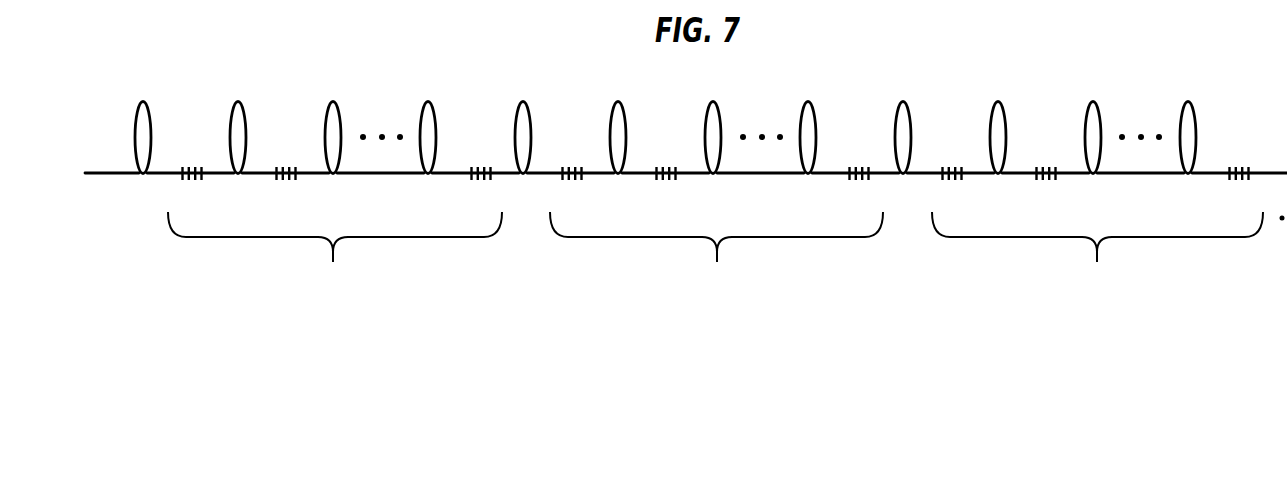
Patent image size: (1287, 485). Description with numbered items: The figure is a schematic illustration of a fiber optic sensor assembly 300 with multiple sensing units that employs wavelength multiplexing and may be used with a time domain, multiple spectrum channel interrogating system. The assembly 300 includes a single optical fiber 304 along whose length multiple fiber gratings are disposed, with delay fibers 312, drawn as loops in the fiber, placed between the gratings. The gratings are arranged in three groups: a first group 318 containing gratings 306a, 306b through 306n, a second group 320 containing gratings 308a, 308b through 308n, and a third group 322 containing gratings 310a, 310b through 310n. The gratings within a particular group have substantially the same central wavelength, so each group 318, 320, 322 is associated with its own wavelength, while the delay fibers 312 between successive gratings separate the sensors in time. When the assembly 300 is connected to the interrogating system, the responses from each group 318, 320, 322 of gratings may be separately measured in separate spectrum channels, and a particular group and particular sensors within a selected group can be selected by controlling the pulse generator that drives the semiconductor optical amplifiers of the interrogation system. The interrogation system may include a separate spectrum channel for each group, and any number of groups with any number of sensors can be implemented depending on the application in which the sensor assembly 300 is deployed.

The fiber optic sensor assembly 300 is at (360, 80).
The optical fiber 304 is at (112, 174).
The fiber grating 306a is at (191, 158).
The fiber grating 306b is at (285, 158).
The fiber grating 306n is at (481, 158).
The fiber grating 308a is at (571, 158).
The fiber grating 308b is at (665, 158).
The fiber grating 308n is at (859, 158).
The fiber grating 310a is at (951, 158).
The fiber grating 310b is at (1045, 158).
The fiber grating 310n is at (1239, 158).
The delay fiber 312 is at (141, 100).
The group of gratings 318 is at (335, 252).
The group of gratings 320 is at (716, 252).
The group of gratings 322 is at (1097, 252).